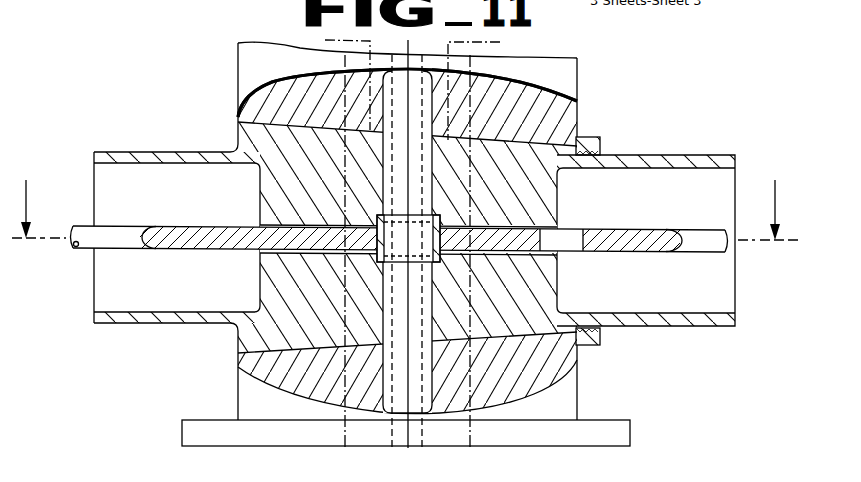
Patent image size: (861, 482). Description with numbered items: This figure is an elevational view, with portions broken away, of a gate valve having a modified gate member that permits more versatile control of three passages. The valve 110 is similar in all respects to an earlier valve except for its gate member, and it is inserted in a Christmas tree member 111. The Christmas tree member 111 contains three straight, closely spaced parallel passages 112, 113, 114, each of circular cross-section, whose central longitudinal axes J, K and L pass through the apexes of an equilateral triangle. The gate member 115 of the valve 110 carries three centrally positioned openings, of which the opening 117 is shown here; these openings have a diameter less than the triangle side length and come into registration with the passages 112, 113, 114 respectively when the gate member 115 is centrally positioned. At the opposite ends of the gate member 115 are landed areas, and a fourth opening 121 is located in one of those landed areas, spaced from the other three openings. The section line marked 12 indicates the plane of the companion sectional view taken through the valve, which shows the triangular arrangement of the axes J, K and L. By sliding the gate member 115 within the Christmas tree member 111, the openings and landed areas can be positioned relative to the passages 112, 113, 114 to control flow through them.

The valve 110 is at (623, 150).
The Christmas tree member 111 is at (580, 83).
The passage 112 is at (346, 440).
The passage 113 is at (432, 402).
The passage 114 is at (466, 440).
The gate member 115 is at (225, 228).
The opening 117 is at (397, 229).
The fourth opening 121 is at (585, 240).
The section line 12- 12 is at (406, 225).